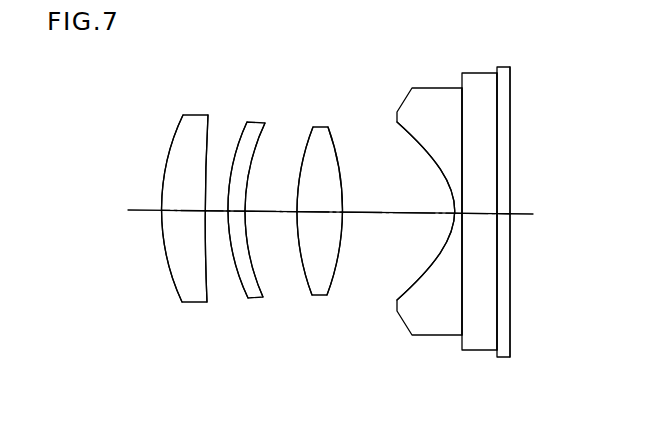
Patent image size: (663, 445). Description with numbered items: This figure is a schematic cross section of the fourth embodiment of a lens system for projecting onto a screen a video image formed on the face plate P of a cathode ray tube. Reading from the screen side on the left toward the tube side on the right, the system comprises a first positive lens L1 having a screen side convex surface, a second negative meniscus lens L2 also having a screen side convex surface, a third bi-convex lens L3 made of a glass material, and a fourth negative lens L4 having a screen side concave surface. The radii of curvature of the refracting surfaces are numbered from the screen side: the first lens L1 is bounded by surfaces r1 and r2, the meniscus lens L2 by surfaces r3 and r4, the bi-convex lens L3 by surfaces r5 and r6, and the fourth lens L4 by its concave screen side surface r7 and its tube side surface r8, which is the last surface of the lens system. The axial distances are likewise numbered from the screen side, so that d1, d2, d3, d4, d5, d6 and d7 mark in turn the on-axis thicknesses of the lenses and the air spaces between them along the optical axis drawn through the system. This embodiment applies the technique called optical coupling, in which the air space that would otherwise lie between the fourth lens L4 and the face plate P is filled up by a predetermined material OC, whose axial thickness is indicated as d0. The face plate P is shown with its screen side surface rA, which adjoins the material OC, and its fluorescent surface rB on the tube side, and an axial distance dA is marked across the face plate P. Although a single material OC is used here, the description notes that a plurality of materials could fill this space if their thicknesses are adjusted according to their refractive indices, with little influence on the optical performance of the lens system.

The first positive lens L1 is at (193, 303).
The second negative meniscus lens L2 is at (255, 300).
The third bi-convex lens L3 is at (322, 297).
The fourth negative lens L4 is at (417, 336).
The optical coupling material OC is at (469, 352).
The face plate P is at (505, 358).
The first radius of curvature r1 is at (173, 138).
The second radius of curvature r2 is at (208, 131).
The third radius of curvature r3 is at (244, 133).
The fourth radius of curvature r4 is at (267, 130).
The fifth radius of curvature r5 is at (309, 138).
The sixth radius of curvature r6 is at (332, 141).
The seventh radius of curvature r7 is at (416, 140).
The tube side surface of the fourth lens r8 is at (462, 105).
The screen side surface of the face plate rA is at (497, 83).
The fluorescent surface of the face plate rB is at (510, 92).
The first axial distance d1 is at (184, 196).
The second axial distance d2 is at (216, 203).
The third axial distance d3 is at (237, 211).
The fourth axial distance d4 is at (271, 197).
The fifth axial distance d5 is at (319, 198).
The sixth axial distance d6 is at (398, 198).
The seventh axial distance d7 is at (459, 212).
The axial thickness of the optical coupling material d0 is at (479, 199).
The plate axial thickness dA is at (504, 213).